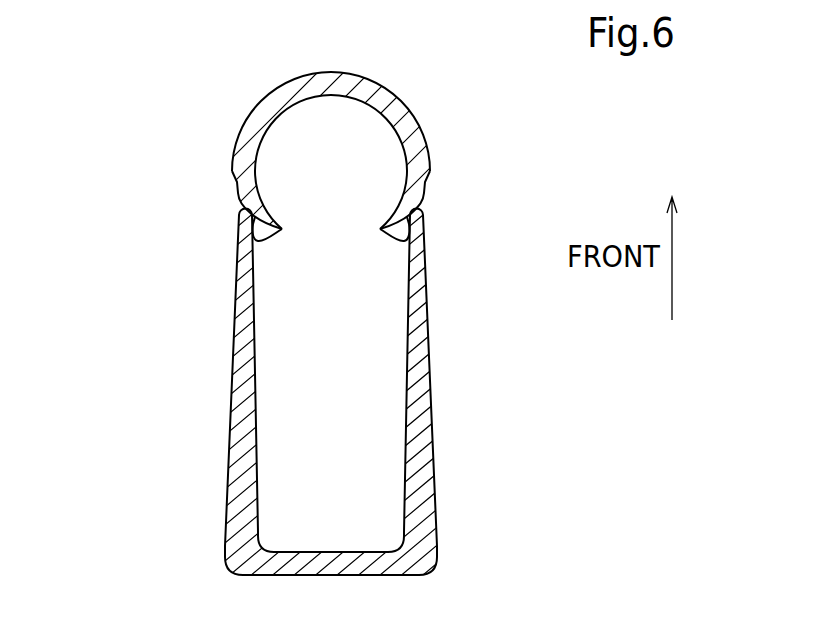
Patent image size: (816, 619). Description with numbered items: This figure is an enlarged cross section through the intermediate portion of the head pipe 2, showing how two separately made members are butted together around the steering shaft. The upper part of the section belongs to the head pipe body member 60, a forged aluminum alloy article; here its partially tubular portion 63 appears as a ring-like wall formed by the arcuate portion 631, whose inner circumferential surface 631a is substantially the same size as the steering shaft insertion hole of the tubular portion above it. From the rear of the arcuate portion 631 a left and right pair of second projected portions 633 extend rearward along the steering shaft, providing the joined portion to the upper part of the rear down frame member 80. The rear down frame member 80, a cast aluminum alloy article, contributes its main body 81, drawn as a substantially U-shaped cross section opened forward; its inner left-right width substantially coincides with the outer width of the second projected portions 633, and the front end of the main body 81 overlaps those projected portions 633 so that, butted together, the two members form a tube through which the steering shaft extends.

The head pipe 2 is at (178, 152).
The head pipe body member 60 is at (383, 78).
The partially tubular portion 63 is at (326, 84).
The arcuate portion 631 is at (258, 98).
The inner circumferential surface 631a is at (318, 97).
The second projected portion 633 is at (257, 241).
The rear down frame member 80 is at (233, 468).
The main body 81 is at (233, 363).